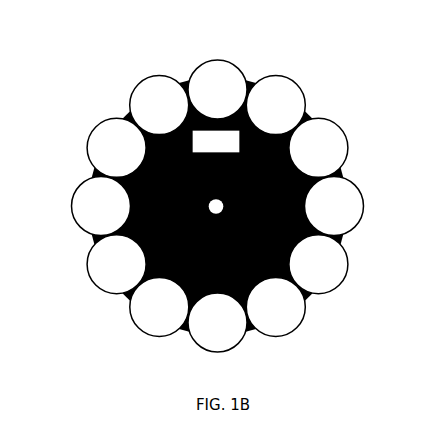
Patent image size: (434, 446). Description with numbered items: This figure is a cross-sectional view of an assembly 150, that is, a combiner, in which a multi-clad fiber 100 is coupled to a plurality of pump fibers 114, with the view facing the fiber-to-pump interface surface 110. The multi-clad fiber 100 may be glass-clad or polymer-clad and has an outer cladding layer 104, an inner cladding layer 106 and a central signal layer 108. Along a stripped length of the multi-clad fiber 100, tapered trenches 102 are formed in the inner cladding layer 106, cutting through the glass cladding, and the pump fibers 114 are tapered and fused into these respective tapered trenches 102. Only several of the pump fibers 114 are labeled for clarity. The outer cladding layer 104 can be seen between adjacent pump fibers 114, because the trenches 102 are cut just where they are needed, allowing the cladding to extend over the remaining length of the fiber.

The multi-clad fiber 100 is at (340, 240).
The tapered trenches 102 is at (108, 201).
The outer cladding layer 104 is at (181, 75).
The inner cladding layer 106 is at (150, 247).
The signal layer 108 is at (240, 222).
The fiber-to-pump interface surface 110 is at (231, 150).
The pump fibers 114 is at (230, 98).
The assembly 150 is at (350, 95).